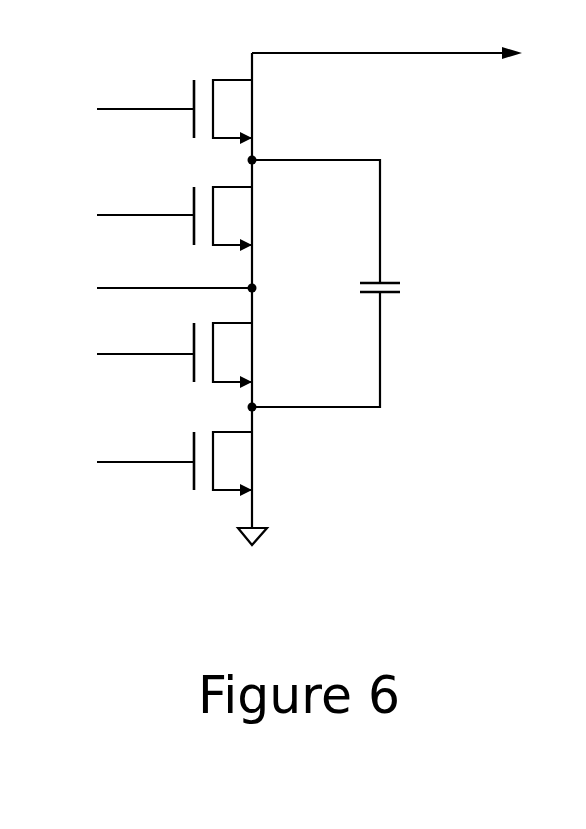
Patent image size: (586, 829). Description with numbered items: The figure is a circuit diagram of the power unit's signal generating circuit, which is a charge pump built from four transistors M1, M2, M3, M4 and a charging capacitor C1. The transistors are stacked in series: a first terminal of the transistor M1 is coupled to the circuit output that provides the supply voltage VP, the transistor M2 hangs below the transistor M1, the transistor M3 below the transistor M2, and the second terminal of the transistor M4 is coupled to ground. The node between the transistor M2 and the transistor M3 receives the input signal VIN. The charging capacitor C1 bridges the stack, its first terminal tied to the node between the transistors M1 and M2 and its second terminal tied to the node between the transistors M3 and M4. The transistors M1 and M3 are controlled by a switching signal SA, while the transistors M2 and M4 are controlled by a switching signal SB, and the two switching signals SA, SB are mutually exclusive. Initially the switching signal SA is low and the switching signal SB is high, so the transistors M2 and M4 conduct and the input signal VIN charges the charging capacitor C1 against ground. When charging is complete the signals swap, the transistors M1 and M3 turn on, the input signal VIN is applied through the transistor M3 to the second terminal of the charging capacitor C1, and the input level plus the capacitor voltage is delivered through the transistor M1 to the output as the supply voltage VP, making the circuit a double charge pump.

The transistor M1 is at (242, 112).
The transistor M2 is at (242, 219).
The transistor M3 is at (242, 355).
The transistor M4 is at (242, 464).
The charging capacitor C1 is at (342, 283).
The supply voltage VP is at (402, 56).
The input signal VIN is at (154, 286).
The switching signal SA is at (126, 231).
The switching signal SB is at (126, 339).